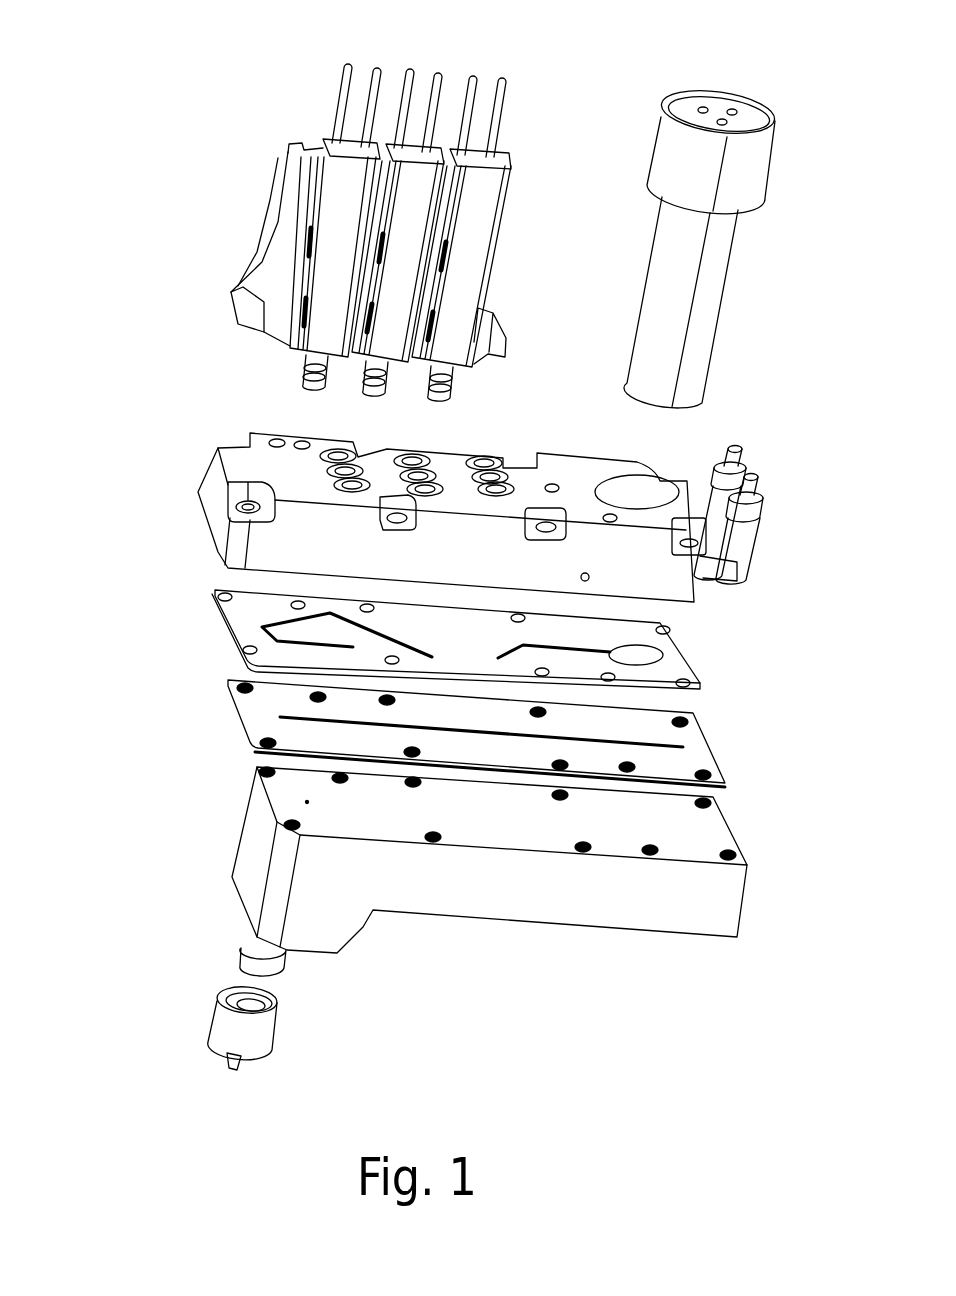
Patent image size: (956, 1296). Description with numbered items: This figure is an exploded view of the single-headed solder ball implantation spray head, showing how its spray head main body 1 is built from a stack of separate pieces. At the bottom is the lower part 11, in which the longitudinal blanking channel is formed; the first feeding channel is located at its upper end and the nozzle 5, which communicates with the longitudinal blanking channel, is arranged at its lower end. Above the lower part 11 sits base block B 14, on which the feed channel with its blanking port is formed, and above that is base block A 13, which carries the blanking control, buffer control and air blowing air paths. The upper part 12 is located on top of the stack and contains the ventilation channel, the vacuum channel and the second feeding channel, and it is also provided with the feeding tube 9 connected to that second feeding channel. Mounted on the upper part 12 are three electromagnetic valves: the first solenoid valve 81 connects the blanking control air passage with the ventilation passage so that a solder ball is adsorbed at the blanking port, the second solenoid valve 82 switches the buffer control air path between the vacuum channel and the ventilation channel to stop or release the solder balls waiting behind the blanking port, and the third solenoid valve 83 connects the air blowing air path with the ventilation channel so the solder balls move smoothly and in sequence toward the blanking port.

The spray head main body 1 is at (416, 704).
The lower part 11 is at (245, 870).
The upper part 12 is at (212, 490).
The base block A 13 is at (227, 648).
The base block B 14 is at (247, 723).
The nozzle 5 is at (208, 1031).
The feeding tube 9 is at (732, 248).
The first solenoid valve 81 is at (320, 138).
The second solenoid valve 82 is at (420, 138).
The third solenoid valve 83 is at (503, 155).